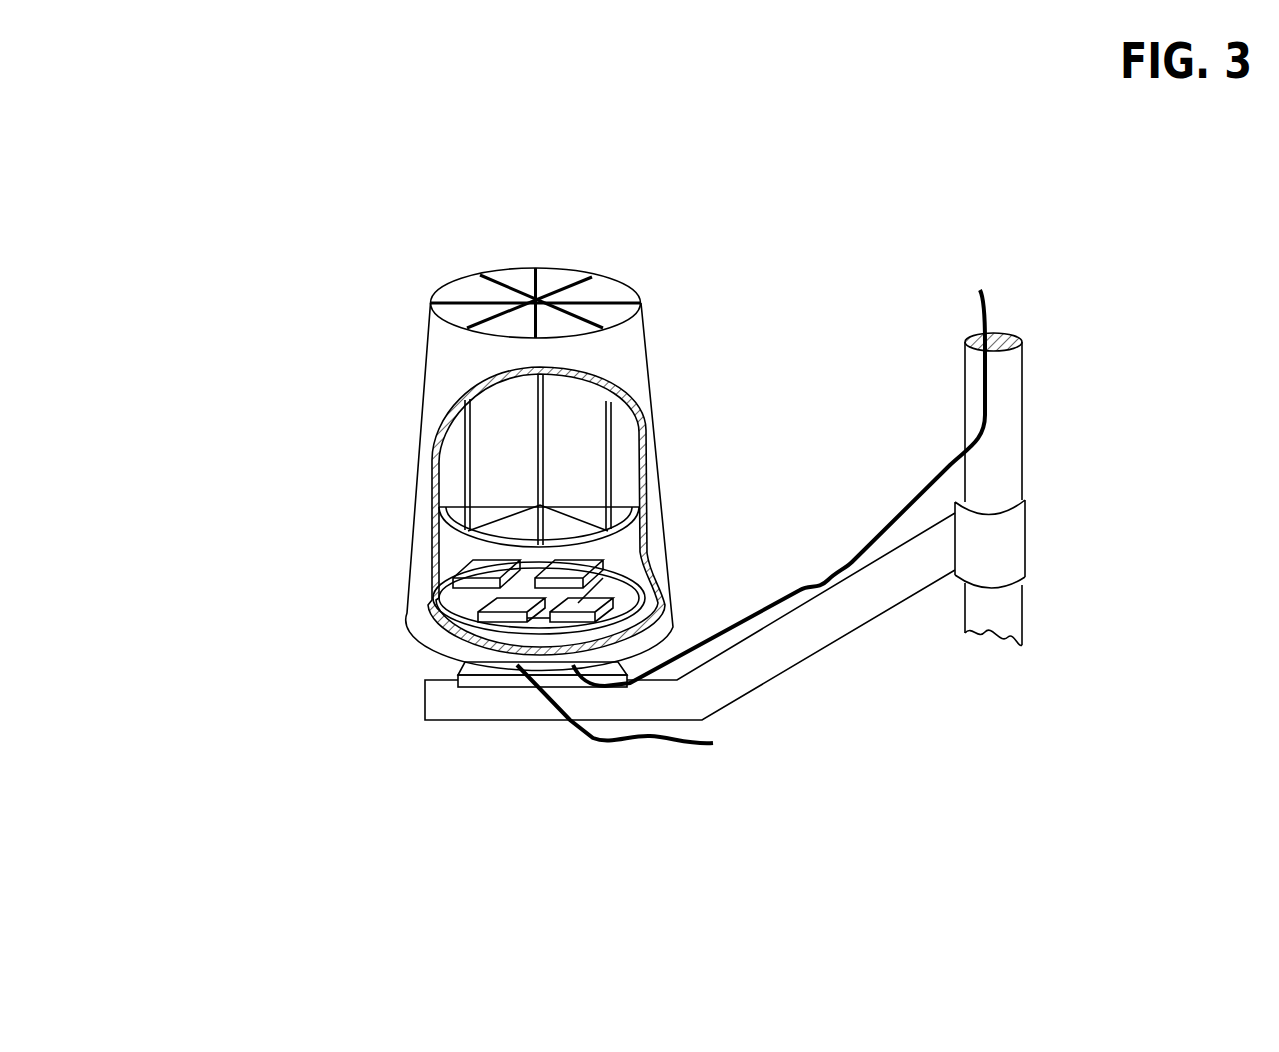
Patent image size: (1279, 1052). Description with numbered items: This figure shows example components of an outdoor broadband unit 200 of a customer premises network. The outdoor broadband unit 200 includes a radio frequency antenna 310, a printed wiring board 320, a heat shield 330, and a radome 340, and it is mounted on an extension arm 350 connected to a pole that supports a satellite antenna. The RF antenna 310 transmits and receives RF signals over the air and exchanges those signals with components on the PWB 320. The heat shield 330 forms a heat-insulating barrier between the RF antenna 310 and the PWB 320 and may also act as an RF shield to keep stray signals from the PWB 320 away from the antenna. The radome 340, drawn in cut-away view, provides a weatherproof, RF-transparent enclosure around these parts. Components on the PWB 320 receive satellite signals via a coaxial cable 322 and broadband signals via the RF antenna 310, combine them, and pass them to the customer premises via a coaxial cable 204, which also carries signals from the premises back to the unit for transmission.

The outdoor broadband unit 200 is at (484, 428).
The radome 340 is at (437, 348).
The RF antenna 310 is at (455, 480).
The printed wiring board 320 is at (455, 602).
The heat shield 330 is at (645, 530).
The coaxial cable 322 is at (980, 322).
The extension arm 350 is at (893, 608).
The coaxial cable 204 is at (595, 738).